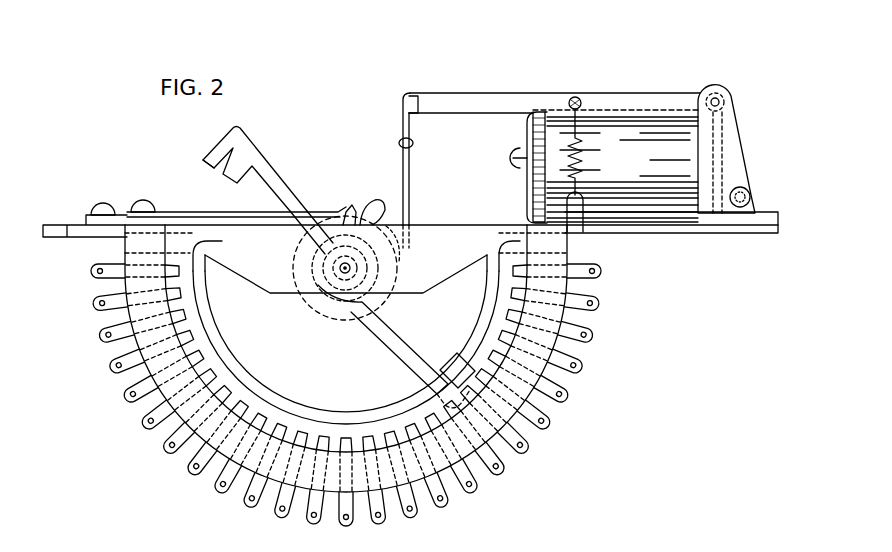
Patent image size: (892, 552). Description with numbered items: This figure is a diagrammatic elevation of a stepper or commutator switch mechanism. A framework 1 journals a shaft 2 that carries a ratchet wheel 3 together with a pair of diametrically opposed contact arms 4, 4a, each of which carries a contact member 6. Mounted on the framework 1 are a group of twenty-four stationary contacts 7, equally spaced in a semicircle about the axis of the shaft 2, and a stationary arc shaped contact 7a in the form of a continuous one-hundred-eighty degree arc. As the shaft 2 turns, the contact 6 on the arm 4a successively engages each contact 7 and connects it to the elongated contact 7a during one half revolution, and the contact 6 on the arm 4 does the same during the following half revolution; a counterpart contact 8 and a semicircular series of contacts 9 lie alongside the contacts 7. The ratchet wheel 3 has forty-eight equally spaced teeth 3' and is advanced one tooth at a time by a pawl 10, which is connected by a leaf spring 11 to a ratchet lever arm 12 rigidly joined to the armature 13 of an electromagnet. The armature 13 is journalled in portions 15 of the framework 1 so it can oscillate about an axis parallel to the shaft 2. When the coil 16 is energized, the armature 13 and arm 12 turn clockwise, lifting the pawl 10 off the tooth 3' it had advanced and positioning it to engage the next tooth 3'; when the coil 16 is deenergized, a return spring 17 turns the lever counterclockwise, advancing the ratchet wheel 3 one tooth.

The framework 1 is at (258, 280).
The shaft 2 is at (340, 268).
The ratchet wheel 3 is at (349, 207).
The teeth 3' is at (379, 226).
The contact arm 4 is at (278, 178).
The contact arm 4a is at (410, 340).
The contact member 6 is at (217, 150).
The stationary contacts 7 is at (100, 304).
The stationary arc shaped contact 7a is at (278, 400).
The contact 8 is at (103, 209).
The stationary contacts 9 is at (143, 206).
The pawl 10 is at (413, 185).
The leaf spring 11 is at (404, 122).
The ratchet lever arm 12 is at (535, 93).
The armature 13 is at (733, 125).
The framework portions 15 is at (722, 88).
The coil 16 is at (630, 126).
The return spring 17 is at (582, 166).